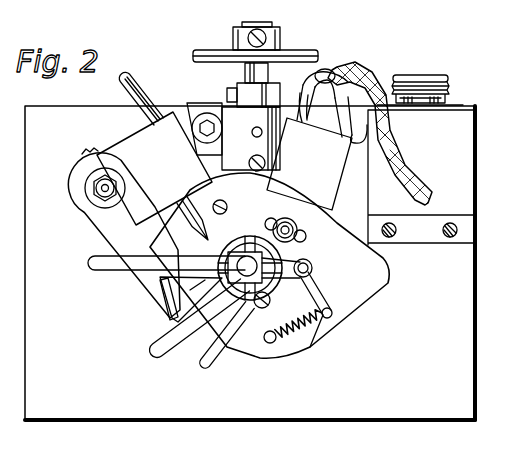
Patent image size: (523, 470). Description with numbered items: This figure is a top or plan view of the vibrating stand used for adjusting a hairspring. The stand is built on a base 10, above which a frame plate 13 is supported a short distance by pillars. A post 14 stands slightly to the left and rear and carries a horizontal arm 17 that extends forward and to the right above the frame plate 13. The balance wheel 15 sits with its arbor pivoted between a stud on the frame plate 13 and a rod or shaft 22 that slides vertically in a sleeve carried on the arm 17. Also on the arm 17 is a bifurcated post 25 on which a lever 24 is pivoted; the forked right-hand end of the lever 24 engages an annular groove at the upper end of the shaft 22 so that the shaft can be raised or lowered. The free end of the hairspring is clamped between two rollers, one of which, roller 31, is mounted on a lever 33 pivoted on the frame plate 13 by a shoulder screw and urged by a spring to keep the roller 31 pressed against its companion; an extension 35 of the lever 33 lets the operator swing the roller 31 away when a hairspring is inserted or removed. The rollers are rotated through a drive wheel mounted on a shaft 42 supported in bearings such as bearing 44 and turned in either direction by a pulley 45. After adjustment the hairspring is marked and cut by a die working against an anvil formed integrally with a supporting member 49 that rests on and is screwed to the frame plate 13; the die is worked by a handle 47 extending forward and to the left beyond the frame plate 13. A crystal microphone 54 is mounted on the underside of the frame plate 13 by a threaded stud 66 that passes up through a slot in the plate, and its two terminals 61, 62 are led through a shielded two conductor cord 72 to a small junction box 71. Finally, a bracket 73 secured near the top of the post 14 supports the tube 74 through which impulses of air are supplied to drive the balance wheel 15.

The base 10 is at (377, 413).
The frame plate 13 is at (315, 330).
The post 14 is at (103, 187).
The balance wheel 15 is at (237, 242).
The horizontal arm 17 is at (123, 228).
The rod or shaft 22 is at (283, 268).
The lever 24 is at (98, 272).
The bifurcated post 25 is at (160, 305).
The roller 31 is at (260, 312).
The lever 33 is at (288, 292).
The extension 35 is at (203, 363).
The shaft 42 is at (242, 70).
The bearing 44 is at (197, 108).
The pulley 45 is at (296, 52).
The handle 47 is at (152, 352).
The supporting member 49 is at (165, 320).
The crystal microphone 54 is at (316, 172).
The terminal 61 is at (303, 104).
The terminal 62 is at (357, 149).
The threaded stud 66 is at (297, 233).
The junction box 71 is at (457, 175).
The shielded two conductor cord 72 is at (365, 97).
The bracket 73 is at (128, 147).
The tube 74 is at (186, 218).